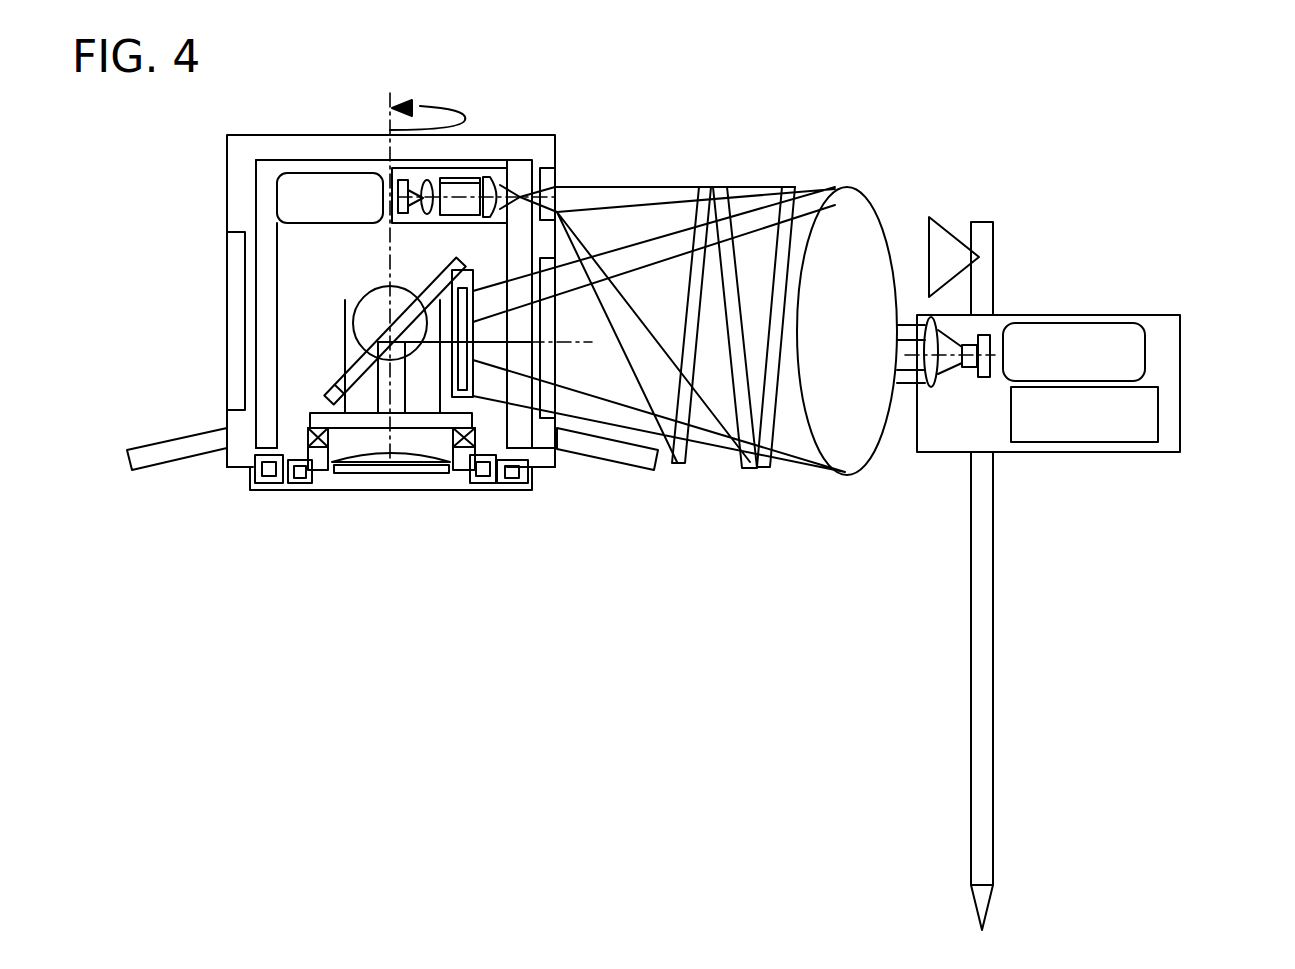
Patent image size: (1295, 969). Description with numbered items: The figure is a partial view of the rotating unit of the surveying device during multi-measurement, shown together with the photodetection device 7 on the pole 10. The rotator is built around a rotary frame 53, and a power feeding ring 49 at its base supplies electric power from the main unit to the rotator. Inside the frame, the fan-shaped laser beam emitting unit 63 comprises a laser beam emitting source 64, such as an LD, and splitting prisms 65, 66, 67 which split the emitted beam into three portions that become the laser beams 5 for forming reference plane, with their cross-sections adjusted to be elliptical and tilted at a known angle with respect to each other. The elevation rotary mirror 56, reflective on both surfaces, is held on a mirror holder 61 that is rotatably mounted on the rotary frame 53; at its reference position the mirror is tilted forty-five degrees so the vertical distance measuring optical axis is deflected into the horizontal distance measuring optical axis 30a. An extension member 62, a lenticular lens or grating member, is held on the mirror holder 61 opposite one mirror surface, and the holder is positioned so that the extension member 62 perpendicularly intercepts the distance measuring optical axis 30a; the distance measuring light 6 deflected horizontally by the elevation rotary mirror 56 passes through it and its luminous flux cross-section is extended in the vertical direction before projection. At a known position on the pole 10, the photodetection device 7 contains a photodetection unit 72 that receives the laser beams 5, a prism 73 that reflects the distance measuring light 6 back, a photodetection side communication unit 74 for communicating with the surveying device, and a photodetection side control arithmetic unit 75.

The laser beams for forming reference plane 5 is at (677, 187).
The distance measuring light 6 is at (803, 200).
The photodetection device 7 is at (1068, 312).
The pole 10 is at (993, 752).
The distance measuring optical axis 30a is at (578, 340).
The power feeding ring 49 is at (257, 457).
The rotary frame 53 is at (277, 333).
The elevation rotary mirror 56 is at (417, 292).
The mirror holder 61 is at (470, 268).
The extension member 62 is at (472, 300).
The fan-shaped laser beam emitting unit 63 is at (487, 168).
The laser beam emitting source 64 is at (402, 178).
The splitting prism 65 is at (427, 197).
The splitting prism 66 is at (460, 176).
The splitting prism 67 is at (490, 197).
The photodetection unit 72 is at (965, 335).
The prism 73 is at (950, 228).
The photodetection side communication unit 74 is at (1158, 412).
The photodetection side control arithmetic unit 75 is at (1145, 345).